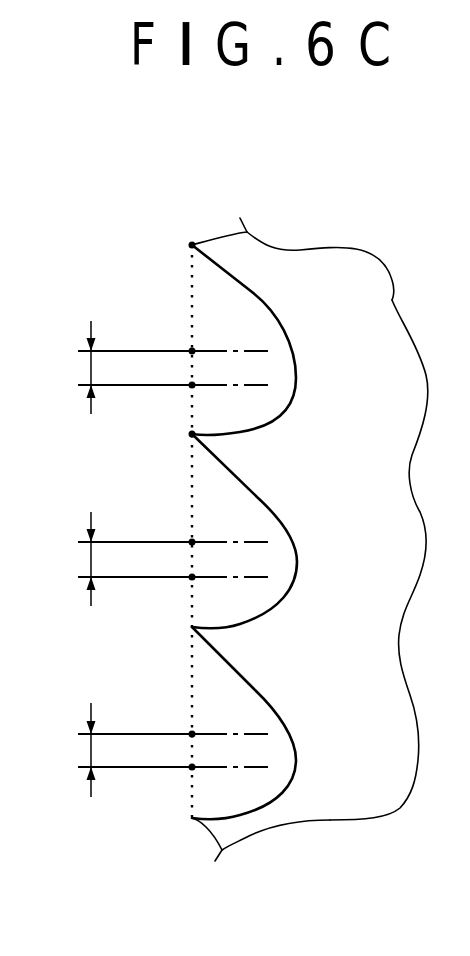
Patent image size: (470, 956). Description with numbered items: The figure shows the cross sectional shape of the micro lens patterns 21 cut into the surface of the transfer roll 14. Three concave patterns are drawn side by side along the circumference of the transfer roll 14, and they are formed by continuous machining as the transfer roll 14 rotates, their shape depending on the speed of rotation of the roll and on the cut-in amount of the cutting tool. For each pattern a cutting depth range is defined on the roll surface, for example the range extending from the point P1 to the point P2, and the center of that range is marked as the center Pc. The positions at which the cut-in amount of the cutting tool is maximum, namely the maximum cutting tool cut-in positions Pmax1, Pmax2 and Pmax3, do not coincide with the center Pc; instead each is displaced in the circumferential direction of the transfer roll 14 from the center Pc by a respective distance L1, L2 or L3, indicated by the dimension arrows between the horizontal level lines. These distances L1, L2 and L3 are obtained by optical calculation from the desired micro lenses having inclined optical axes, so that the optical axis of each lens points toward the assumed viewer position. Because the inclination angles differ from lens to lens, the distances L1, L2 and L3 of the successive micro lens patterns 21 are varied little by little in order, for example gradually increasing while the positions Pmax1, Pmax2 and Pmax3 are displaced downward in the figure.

The transfer roll 14 is at (355, 270).
The micro lens patterns 21 is at (192, 257).
The start of cutting depth range P1 is at (192, 245).
The end of cutting depth range P2 is at (192, 434).
The center of cutting depth range Pc is at (192, 351).
The maximum cutting tool cut-in position Pmax1 is at (192, 767).
The maximum cutting tool cut-in position Pmax2 is at (192, 577).
The maximum cutting tool cut-in position Pmax3 is at (192, 385).
The distance L1 is at (74, 750).
The distance L2 is at (74, 559).
The distance L3 is at (74, 367).